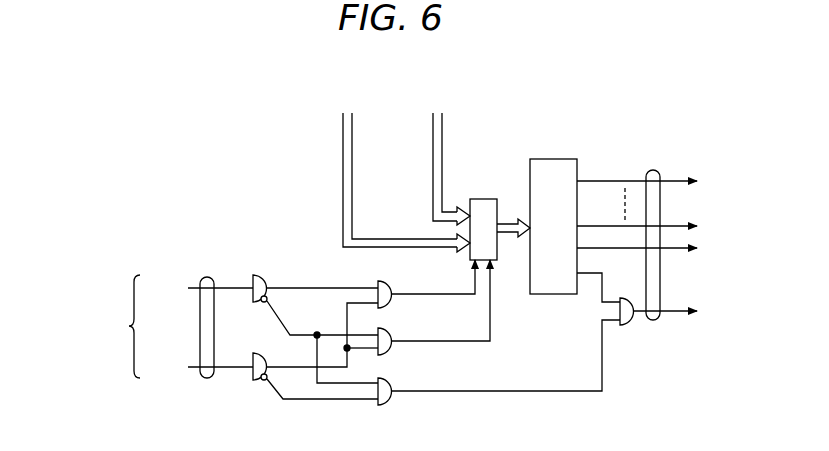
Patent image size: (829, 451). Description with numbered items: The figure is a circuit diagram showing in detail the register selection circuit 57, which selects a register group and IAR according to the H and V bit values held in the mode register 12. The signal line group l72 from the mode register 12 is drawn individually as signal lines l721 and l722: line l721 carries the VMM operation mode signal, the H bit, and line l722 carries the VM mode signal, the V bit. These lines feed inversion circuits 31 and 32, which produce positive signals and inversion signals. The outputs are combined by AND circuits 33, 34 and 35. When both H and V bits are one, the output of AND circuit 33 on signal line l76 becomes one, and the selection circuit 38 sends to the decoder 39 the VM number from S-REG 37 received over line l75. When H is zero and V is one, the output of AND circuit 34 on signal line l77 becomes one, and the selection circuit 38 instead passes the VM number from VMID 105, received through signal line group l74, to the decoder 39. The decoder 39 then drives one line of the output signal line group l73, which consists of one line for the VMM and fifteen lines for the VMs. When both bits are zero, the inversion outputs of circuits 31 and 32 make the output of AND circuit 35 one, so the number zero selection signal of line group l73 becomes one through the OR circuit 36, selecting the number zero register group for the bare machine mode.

The register selection circuit 57 is at (239, 144).
The S-REG 37 is at (347, 81).
The VMID 105 is at (443, 81).
The line l75 is at (343, 148).
The signal line group l74 is at (442, 148).
The selection circuit 38 is at (484, 199).
The decoder 39 is at (563, 159).
The signal line group l73 is at (655, 322).
The OR circuit 36 is at (628, 327).
The mode register 12 is at (106, 326).
The signal line group l72 is at (205, 277).
The signal line l721 is at (197, 283).
The signal line l722 is at (197, 362).
The inversion circuit 31 is at (257, 275).
The inversion circuit 32 is at (256, 353).
The AND circuit 33 is at (378, 284).
The AND circuit 34 is at (390, 352).
The AND circuit 35 is at (390, 402).
The signal line l76 is at (446, 294).
The signal line l77 is at (478, 343).